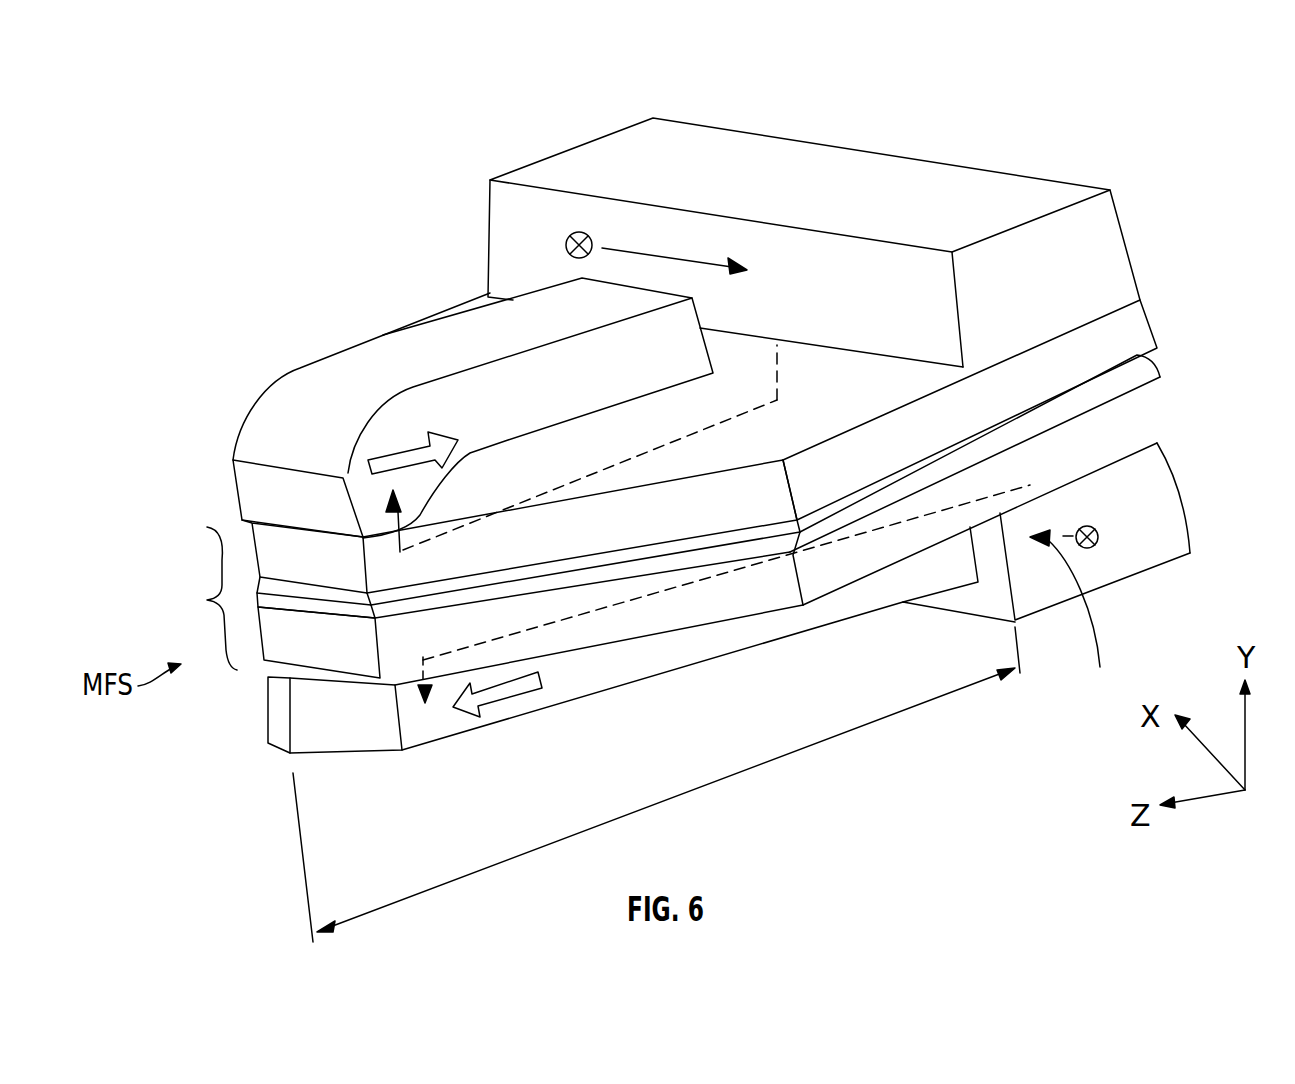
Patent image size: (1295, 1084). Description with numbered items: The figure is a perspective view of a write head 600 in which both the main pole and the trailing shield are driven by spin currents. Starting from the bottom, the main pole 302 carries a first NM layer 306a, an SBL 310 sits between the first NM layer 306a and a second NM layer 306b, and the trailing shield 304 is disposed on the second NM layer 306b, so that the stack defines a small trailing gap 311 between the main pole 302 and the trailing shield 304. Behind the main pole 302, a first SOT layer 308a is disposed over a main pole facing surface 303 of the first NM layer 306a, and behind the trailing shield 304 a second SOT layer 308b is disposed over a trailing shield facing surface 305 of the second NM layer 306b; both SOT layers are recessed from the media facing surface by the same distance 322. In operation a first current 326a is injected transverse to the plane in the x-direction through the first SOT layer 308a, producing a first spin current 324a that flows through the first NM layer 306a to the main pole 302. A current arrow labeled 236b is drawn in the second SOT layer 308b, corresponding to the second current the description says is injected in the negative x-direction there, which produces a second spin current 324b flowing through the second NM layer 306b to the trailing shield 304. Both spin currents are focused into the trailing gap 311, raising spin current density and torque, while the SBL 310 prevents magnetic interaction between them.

The write head 600 is at (192, 153).
The second spin-orbit torque current Js2 in trailing shield 236b is at (645, 252).
The second SOT layer 308b is at (802, 201).
The second spin current 324b is at (600, 474).
The trailing shield 304 is at (310, 417).
The second NM layer 306b is at (273, 565).
The trailing shield facing surface 305 is at (880, 399).
The trailing gap 311 is at (199, 598).
The main pole 302 is at (361, 734).
The first NM layer 306a is at (303, 648).
The SBL 310 is at (420, 606).
The distance 322 is at (582, 828).
The main pole facing surface 303 is at (803, 603).
The first spin current 324a is at (850, 533).
The first SOT layer 308a is at (1180, 545).
The first current 326a is at (1080, 634).